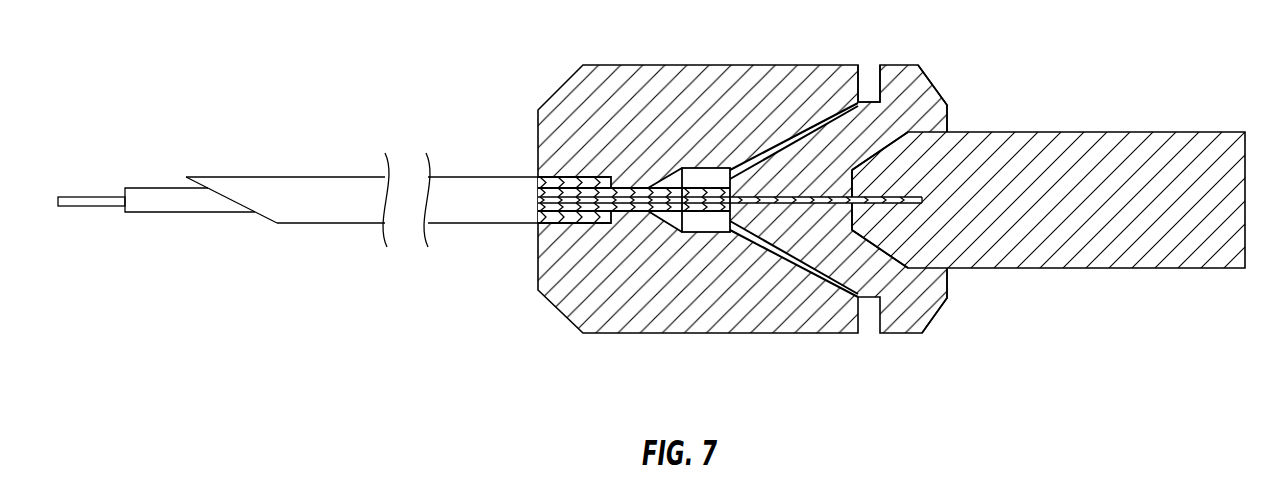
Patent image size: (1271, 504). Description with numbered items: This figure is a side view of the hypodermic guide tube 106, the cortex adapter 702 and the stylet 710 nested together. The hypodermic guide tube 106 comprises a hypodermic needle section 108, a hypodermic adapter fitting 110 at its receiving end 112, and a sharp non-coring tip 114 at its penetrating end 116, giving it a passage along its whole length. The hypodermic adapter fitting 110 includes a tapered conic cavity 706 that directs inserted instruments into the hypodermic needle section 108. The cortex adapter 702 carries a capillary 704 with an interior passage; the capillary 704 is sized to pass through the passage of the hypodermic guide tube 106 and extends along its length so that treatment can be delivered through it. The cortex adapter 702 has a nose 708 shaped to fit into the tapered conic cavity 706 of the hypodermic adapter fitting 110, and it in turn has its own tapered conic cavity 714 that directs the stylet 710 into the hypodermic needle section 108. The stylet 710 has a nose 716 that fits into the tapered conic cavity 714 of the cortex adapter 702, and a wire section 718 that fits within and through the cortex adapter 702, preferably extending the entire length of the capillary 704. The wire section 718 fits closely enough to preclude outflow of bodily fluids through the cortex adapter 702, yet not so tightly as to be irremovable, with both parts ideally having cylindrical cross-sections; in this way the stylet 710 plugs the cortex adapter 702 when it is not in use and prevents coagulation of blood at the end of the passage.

The hypodermic guide tube 106 is at (510, 253).
The hypodermic needle section 108 is at (315, 177).
The hypodermic adapter fitting 110 is at (693, 313).
The receiving end 112 is at (858, 64).
The sharp non-coring tip 114 is at (190, 177).
The penetrating end 116 is at (237, 177).
The cortex adapter 702 is at (930, 346).
The capillary 704 is at (165, 188).
The tapered conic cavity 706 is at (845, 122).
The nose 708 is at (752, 160).
The stylet 710 is at (1170, 278).
The tapered conic cavity 714 is at (890, 157).
The nose 716 is at (845, 124).
The wire section 718 is at (102, 196).